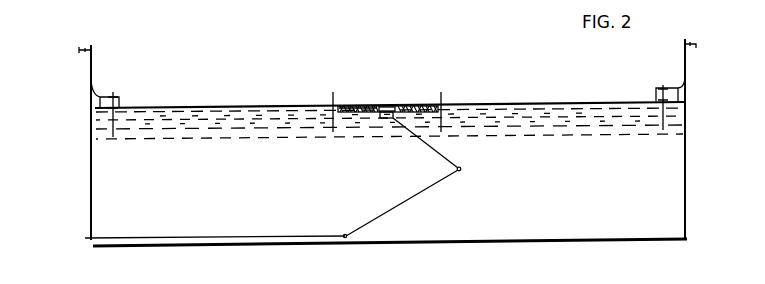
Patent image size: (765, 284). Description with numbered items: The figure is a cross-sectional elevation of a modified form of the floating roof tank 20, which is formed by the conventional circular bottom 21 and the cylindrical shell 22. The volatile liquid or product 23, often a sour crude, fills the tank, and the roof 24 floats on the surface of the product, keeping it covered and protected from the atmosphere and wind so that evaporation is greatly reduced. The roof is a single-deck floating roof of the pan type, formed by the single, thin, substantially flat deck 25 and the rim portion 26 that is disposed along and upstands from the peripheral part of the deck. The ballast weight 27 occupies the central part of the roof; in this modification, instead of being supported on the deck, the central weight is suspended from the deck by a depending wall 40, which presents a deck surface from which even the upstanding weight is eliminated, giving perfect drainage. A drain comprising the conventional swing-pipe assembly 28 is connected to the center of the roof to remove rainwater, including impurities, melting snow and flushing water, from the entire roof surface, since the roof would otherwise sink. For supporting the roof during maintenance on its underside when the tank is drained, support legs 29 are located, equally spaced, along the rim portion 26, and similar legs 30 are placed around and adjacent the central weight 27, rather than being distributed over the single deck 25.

The floating roof tank 20 is at (72, 122).
The bottom 21 is at (551, 247).
The shell 22 is at (92, 186).
The volatile liquid or product 23 is at (676, 161).
The roof 24 is at (213, 99).
The single deck 25 is at (549, 101).
The rim portion 26 is at (110, 96).
The ballast weight 27 is at (402, 93).
The swing-pipe assembly 28 is at (410, 200).
The support legs 29 is at (115, 128).
The legs 30 is at (333, 131).
The depending wall 40 is at (335, 104).